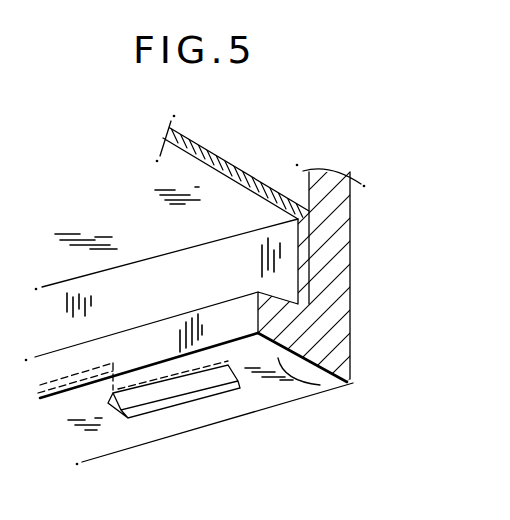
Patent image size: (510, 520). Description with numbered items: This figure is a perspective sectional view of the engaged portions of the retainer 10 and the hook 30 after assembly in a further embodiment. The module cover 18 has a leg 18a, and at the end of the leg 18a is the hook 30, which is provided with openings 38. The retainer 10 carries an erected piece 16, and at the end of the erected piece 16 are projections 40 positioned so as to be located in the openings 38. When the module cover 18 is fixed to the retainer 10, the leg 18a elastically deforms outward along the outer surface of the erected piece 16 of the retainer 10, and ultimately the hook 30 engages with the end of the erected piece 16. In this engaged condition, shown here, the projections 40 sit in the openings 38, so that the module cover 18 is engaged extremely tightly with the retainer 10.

The retainer 10 is at (229, 150).
The erected piece 16 is at (165, 270).
The module cover 18 is at (362, 235).
The leg 18a is at (351, 288).
The hook 30 is at (353, 383).
The openings 38 is at (232, 395).
The projections 40 is at (187, 390).